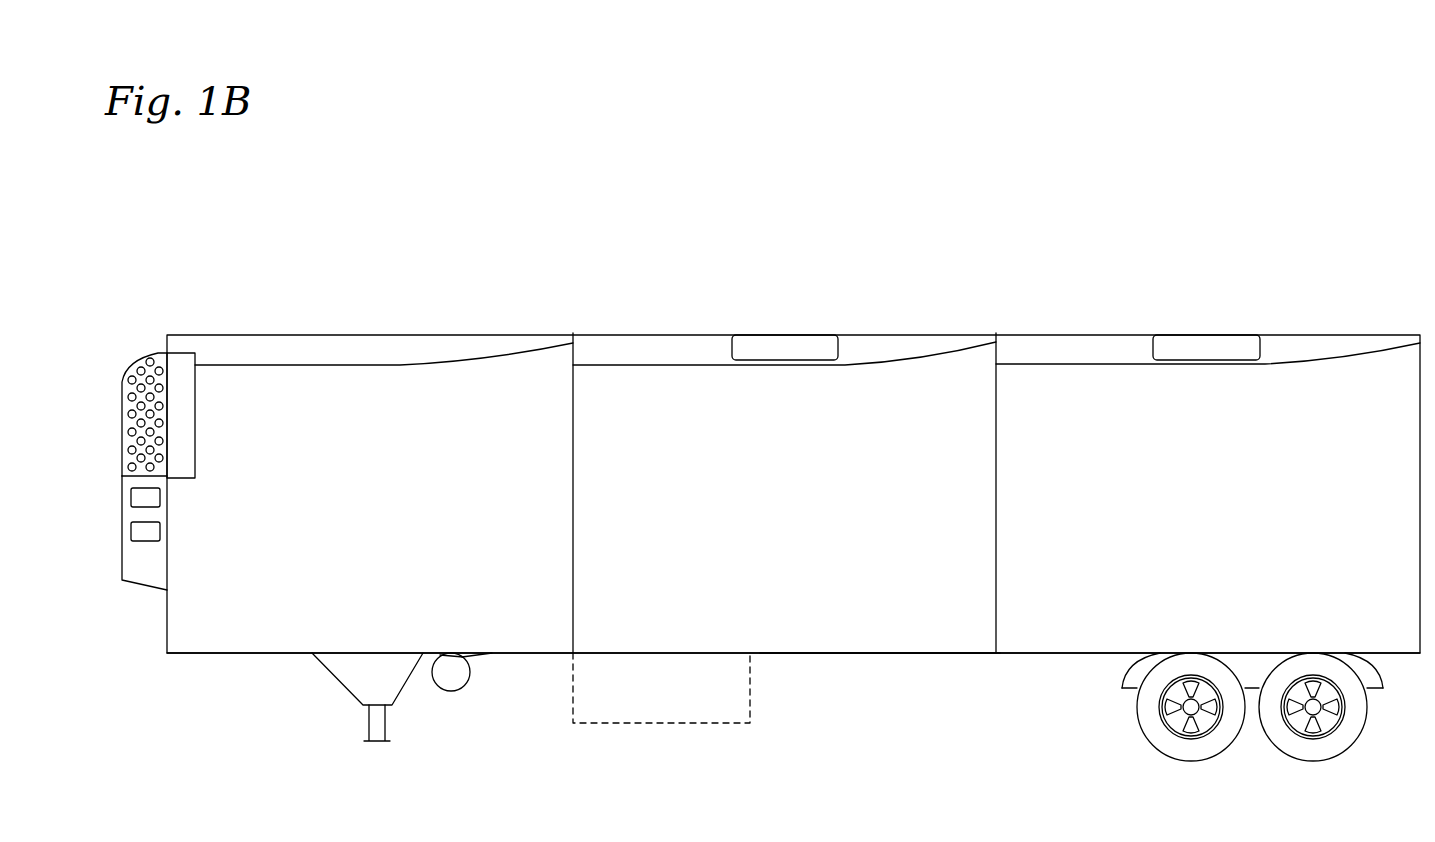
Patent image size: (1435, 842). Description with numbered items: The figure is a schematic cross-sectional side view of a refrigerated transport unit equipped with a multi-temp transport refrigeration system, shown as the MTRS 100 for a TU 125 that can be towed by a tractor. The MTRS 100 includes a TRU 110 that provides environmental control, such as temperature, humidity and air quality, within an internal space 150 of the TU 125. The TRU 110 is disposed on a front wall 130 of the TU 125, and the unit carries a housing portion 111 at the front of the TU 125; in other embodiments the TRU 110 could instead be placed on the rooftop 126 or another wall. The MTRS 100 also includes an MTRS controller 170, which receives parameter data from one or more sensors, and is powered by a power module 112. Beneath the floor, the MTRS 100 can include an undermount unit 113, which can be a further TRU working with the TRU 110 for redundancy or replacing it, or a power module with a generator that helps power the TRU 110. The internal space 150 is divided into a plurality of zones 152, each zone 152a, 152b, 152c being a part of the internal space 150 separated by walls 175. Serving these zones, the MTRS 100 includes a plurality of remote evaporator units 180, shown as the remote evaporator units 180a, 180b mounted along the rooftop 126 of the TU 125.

The MTRS 100 is at (525, 212).
The transport refrigeration unit 111 is at (120, 326).
The TRU 110 is at (145, 592).
The MTRS controller 170 is at (134, 508).
The power module 112 is at (136, 542).
The rooftop 126 is at (403, 333).
The walls 175 is at (572, 400).
The TU 125 is at (1326, 333).
The remote evaporator units 180 is at (1003, 304).
The remote evaporator unit 180a is at (780, 343).
The remote evaporator unit 180b is at (1214, 331).
The front wall 130 is at (167, 647).
The internal space 150 is at (288, 627).
The zones 152 is at (308, 783).
The zone 152a is at (358, 633).
The zone 152b is at (832, 632).
The zone 152c is at (1112, 632).
The undermount unit 113 is at (662, 726).